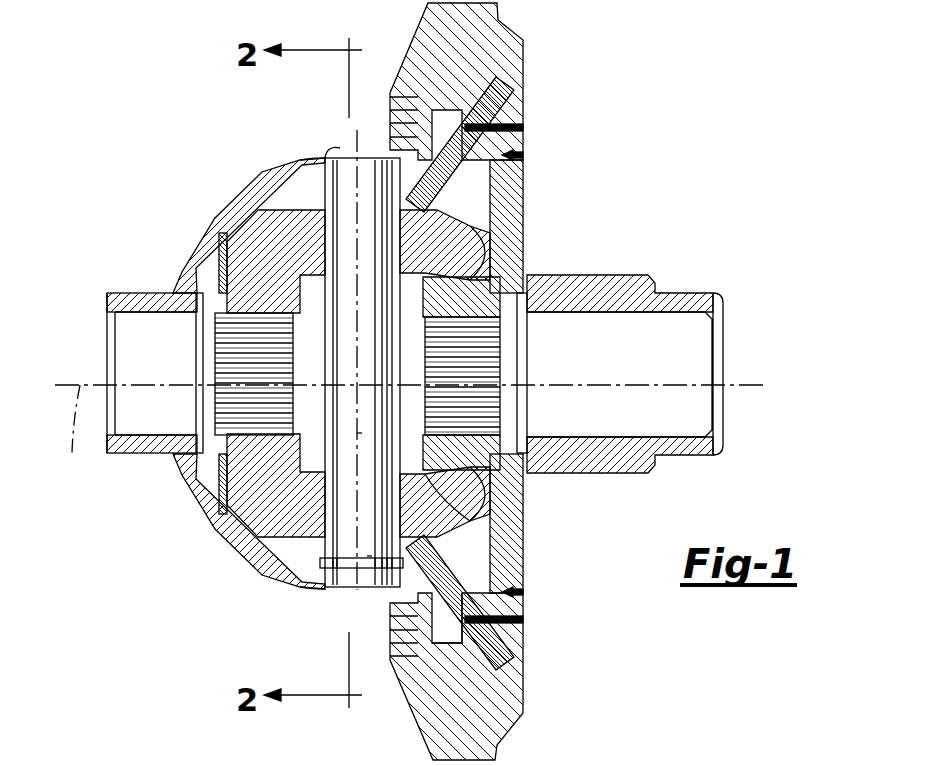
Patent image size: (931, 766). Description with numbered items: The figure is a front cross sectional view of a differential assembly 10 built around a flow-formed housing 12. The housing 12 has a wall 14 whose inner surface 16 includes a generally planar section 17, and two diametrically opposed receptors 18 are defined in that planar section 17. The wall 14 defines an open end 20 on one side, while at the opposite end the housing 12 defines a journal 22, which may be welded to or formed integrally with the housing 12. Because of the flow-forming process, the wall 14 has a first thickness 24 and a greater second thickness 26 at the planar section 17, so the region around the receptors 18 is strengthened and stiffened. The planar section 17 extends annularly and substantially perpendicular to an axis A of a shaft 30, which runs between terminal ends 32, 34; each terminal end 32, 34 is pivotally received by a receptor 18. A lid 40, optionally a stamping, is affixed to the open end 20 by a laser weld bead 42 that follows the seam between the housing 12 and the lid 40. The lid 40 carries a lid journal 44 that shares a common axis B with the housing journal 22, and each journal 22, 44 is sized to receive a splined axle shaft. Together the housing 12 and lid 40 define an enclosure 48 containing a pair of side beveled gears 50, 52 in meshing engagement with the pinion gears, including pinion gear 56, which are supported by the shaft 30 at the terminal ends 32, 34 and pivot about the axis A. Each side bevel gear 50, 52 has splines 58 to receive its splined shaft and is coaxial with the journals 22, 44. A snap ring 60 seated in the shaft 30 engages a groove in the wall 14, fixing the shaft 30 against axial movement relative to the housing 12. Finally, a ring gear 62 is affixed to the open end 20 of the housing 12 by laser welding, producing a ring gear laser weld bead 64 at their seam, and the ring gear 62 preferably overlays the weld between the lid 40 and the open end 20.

The differential assembly 10 is at (193, 107).
The housing 12 is at (205, 560).
The wall 14 is at (208, 186).
The inner surface 16 is at (470, 575).
The generally planar section 17 is at (410, 200).
The receptors 18 is at (318, 165).
The open end 20 is at (506, 155).
The journal 22 is at (125, 292).
The first thickness 24 is at (247, 200).
The second thickness 26 is at (457, 160).
The shaft 30 is at (368, 343).
The terminal end 32 is at (340, 592).
The terminal end 34 is at (323, 168).
The lid 40 is at (521, 233).
The laser weld bead 42 is at (523, 593).
The lid journal 44 is at (640, 283).
The enclosure 48 is at (458, 190).
The side beveled gear 50 is at (240, 480).
The side beveled gear 52 is at (470, 275).
The pinion gear 56 is at (435, 523).
The splines 58 is at (240, 370).
The snap ring 60 is at (368, 556).
The ring gear 62 is at (478, 30).
The ring gear laser weld bead 64 is at (523, 127).
The axis A is at (357, 433).
The common axis B is at (72, 435).